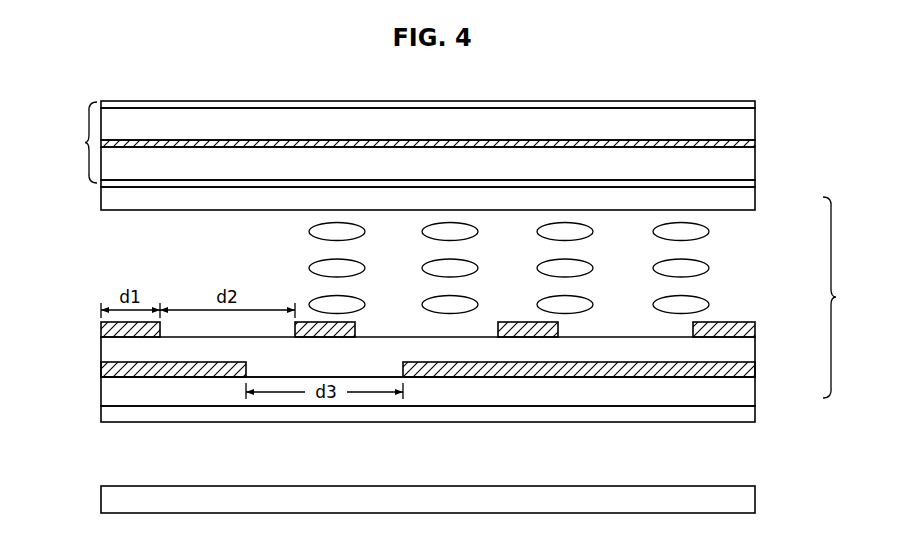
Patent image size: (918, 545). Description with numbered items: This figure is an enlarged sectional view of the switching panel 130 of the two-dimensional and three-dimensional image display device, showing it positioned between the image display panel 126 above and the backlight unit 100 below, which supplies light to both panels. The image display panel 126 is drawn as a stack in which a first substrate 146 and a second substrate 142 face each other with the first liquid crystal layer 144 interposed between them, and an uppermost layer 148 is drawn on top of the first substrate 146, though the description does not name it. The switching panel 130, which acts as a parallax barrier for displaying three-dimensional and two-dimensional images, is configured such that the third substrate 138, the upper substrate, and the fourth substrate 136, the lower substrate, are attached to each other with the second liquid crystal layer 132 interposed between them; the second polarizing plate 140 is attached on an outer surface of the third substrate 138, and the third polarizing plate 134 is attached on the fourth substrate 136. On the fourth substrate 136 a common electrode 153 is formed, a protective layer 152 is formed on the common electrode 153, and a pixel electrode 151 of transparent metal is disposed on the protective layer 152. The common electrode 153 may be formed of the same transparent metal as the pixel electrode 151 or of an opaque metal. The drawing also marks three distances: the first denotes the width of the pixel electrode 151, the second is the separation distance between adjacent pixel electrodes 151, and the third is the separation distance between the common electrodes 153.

The backlight unit 100 is at (755, 497).
The image display panel 126 is at (74, 142).
The switching panel 130 is at (847, 297).
The second liquid crystal layer 132 is at (720, 267).
The third polarizing plate 134 is at (755, 414).
The fourth substrate 136 is at (755, 392).
The third substrate 138 is at (755, 202).
The second polarizing plate 140 is at (755, 182).
The second substrate 142 is at (755, 163).
The first liquid crystal layer 144 is at (755, 143).
The first substrate 146 is at (755, 124).
The layer 148 is at (755, 104).
The pixel electrode 151 is at (755, 329).
The protective layer 152 is at (755, 350).
The common electrode 153 is at (755, 372).